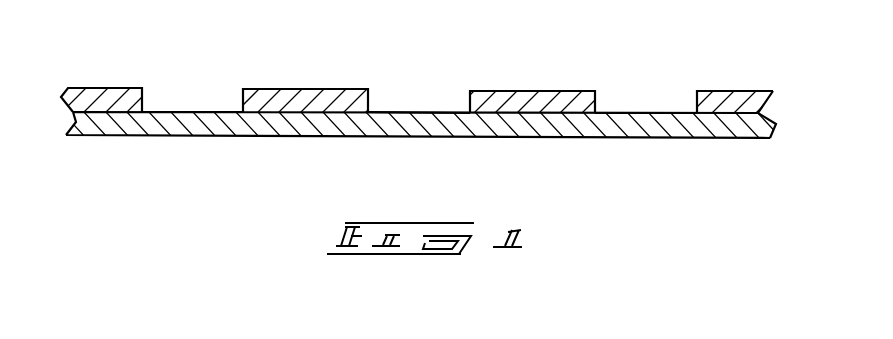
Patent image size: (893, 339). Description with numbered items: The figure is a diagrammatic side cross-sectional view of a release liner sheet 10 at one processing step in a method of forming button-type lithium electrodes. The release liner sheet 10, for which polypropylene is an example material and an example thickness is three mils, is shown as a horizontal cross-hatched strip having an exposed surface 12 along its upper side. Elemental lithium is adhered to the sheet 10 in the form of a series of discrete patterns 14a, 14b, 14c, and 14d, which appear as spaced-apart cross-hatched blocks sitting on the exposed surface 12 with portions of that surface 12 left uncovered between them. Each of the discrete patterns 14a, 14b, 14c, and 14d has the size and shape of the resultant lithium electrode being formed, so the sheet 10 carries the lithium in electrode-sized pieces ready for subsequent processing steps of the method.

The release liner sheet 10 is at (212, 122).
The exposed surface 12 is at (182, 105).
The discrete pattern 14a is at (104, 101).
The discrete pattern 14b is at (298, 100).
The discrete pattern 14c is at (513, 103).
The discrete pattern 14d is at (731, 103).